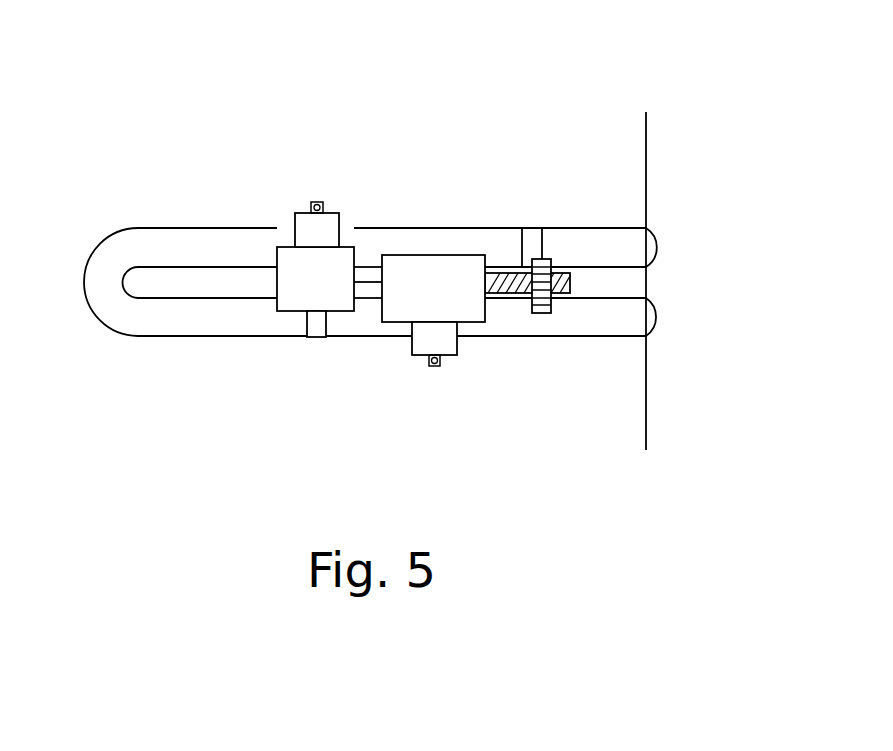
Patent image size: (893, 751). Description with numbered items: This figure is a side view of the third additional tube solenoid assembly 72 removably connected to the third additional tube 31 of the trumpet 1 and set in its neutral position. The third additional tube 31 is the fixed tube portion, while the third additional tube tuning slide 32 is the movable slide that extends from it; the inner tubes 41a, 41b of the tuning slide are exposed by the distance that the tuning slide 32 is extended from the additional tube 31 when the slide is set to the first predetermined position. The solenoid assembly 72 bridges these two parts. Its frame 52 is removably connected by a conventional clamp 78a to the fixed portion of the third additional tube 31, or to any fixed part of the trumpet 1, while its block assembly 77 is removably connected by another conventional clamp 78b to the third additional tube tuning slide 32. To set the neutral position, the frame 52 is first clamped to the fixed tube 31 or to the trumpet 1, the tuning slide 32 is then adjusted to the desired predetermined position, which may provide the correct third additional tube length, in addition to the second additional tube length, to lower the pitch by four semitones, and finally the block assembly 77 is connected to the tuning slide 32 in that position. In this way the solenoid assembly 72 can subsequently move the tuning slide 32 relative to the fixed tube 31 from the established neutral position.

The trumpet 1 is at (706, 226).
The third additional tube solenoid assembly 72 is at (410, 114).
The third additional tube 31 is at (583, 323).
The third additional tube tuning slide 32 is at (137, 321).
The block assembly 77 is at (350, 255).
The clamp 78a is at (425, 343).
The clamp 78b is at (298, 223).
The inner tube of the third additional tube tuning slide 41a is at (315, 323).
The inner tube of the third additional tube tuning slide 41b is at (531, 238).
The frame 52 is at (470, 263).